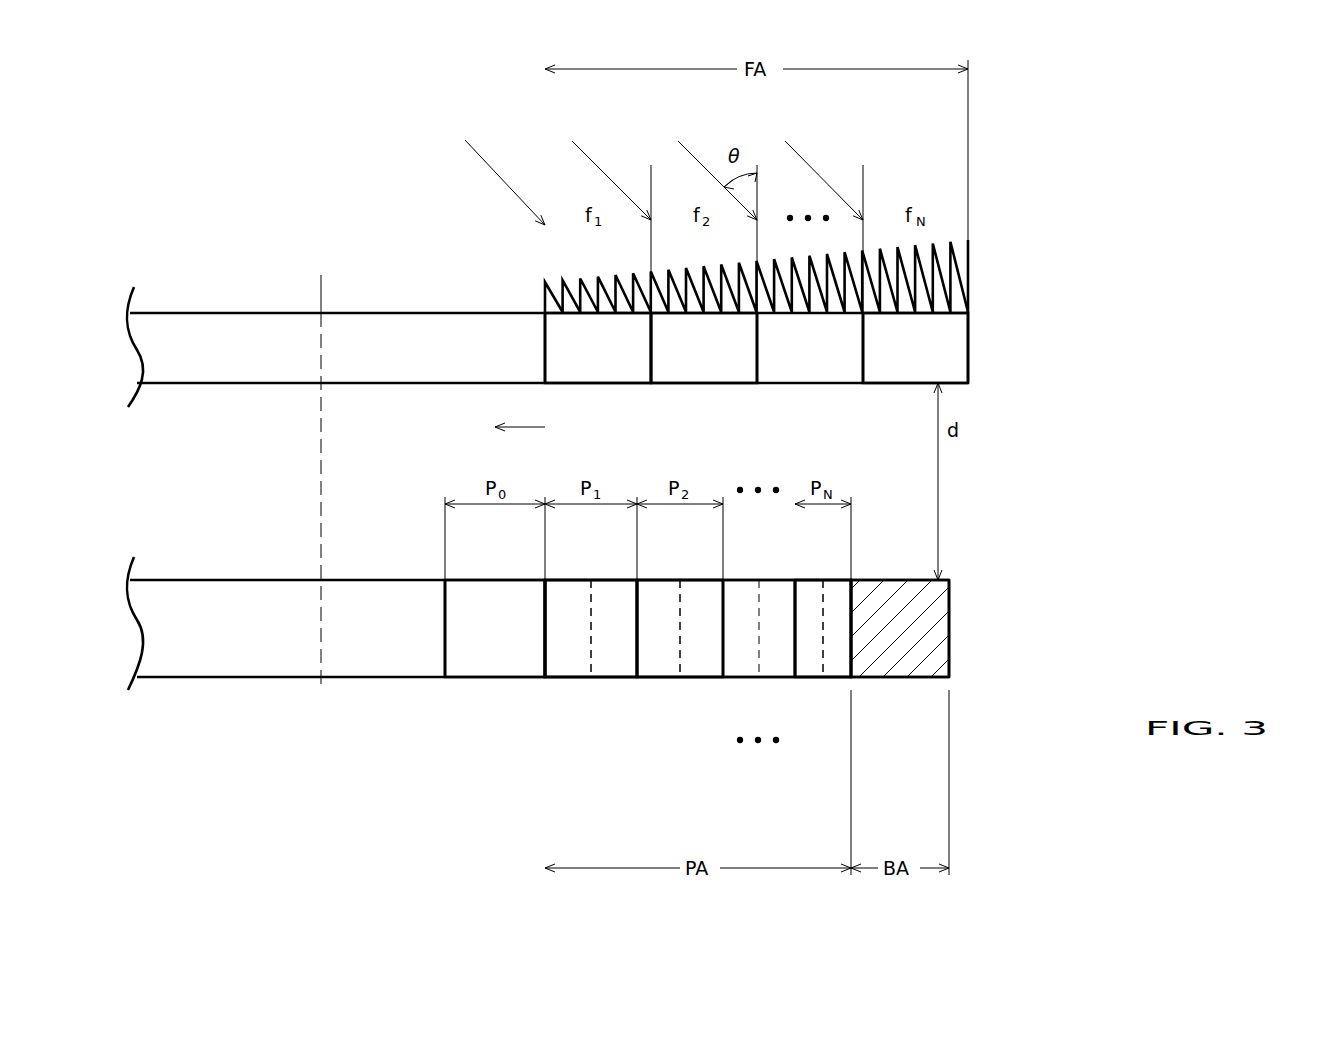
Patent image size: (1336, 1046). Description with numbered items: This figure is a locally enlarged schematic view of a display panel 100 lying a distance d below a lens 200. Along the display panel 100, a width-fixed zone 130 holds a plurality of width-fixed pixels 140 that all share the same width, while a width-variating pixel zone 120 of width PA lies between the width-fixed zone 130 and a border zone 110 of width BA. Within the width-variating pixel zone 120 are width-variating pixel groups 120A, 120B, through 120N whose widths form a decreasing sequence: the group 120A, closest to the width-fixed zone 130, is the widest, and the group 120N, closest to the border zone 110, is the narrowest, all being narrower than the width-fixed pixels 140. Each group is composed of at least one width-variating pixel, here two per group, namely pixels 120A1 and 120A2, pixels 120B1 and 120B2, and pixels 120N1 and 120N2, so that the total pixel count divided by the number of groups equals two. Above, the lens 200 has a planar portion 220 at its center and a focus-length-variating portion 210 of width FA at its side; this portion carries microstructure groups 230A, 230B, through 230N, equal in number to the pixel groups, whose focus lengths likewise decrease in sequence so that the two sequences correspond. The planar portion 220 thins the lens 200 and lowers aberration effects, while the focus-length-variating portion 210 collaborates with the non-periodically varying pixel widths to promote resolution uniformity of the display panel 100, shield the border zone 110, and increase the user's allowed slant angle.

The display panel 100 is at (979, 612).
The border zone 110 is at (918, 643).
The width-variating pixel zone 120 is at (851, 806).
The width-variating pixel group 120A is at (637, 563).
The width-variating pixel group 120B is at (723, 563).
The width-variating pixel group 120N is at (851, 563).
The width-variating pixel 120A1 is at (567, 665).
The width-variating pixel 120A2 is at (615, 662).
The width-variating pixel 120B1 is at (660, 665).
The width-variating pixel 120B2 is at (698, 665).
The width-variating pixel 120N1 is at (812, 665).
The width-variating pixel 120N2 is at (836, 665).
The width-fixed zone 130 is at (478, 439).
The width-fixed pixel 140 is at (513, 643).
The lens 200 is at (994, 345).
The focus-length-variating portion 210 is at (968, 130).
The planar portion 220 is at (502, 73).
The microstructure group 230A is at (600, 312).
The microstructure group 230B is at (710, 312).
The microstructure group 230N is at (898, 312).